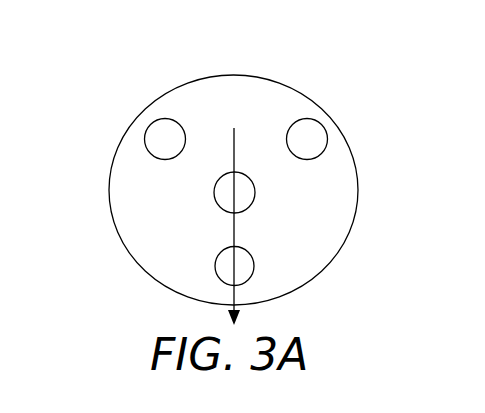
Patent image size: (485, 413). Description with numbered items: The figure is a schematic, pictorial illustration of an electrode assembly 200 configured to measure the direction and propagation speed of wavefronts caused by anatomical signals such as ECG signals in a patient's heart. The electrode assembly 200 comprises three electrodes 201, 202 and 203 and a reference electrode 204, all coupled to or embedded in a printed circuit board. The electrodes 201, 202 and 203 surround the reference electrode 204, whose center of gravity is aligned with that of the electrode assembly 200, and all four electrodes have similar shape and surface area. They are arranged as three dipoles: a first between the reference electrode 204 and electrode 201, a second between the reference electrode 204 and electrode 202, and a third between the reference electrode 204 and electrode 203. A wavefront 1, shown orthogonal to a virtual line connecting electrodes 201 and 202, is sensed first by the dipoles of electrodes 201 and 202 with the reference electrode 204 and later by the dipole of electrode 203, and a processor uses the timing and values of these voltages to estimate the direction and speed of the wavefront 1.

The electrode assembly 200 is at (381, 91).
The wavefront 1 is at (236, 214).
The electrode 201 is at (150, 125).
The electrode 202 is at (327, 139).
The electrode 203 is at (215, 264).
The reference electrode 204 is at (255, 201).